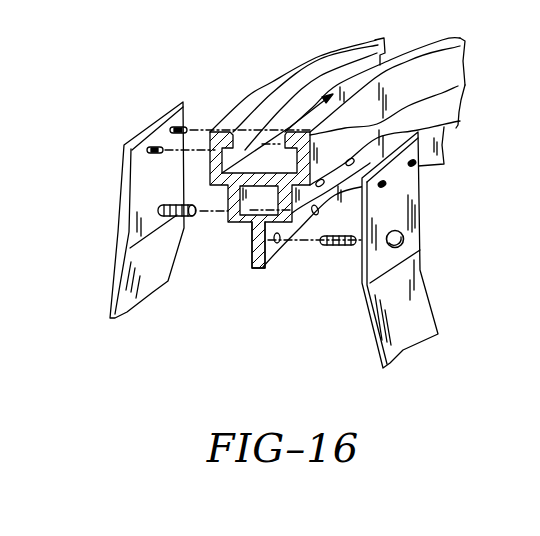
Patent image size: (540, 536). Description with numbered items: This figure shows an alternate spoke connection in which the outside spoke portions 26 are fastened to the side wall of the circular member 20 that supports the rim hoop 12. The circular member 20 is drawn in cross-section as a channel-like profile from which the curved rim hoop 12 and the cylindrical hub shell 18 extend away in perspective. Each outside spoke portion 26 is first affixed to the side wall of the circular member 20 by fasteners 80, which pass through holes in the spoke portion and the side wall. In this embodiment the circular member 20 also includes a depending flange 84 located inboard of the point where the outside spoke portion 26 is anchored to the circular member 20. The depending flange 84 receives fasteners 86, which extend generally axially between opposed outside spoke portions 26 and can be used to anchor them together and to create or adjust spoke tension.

The rim hoop 12 is at (425, 75).
The hub shell 18 is at (430, 118).
The circular member 20 is at (207, 192).
The outside spoke portion 26 is at (440, 300).
The fasteners 80 is at (430, 164).
The depending flange 84 is at (254, 267).
The fasteners 86 is at (181, 218).